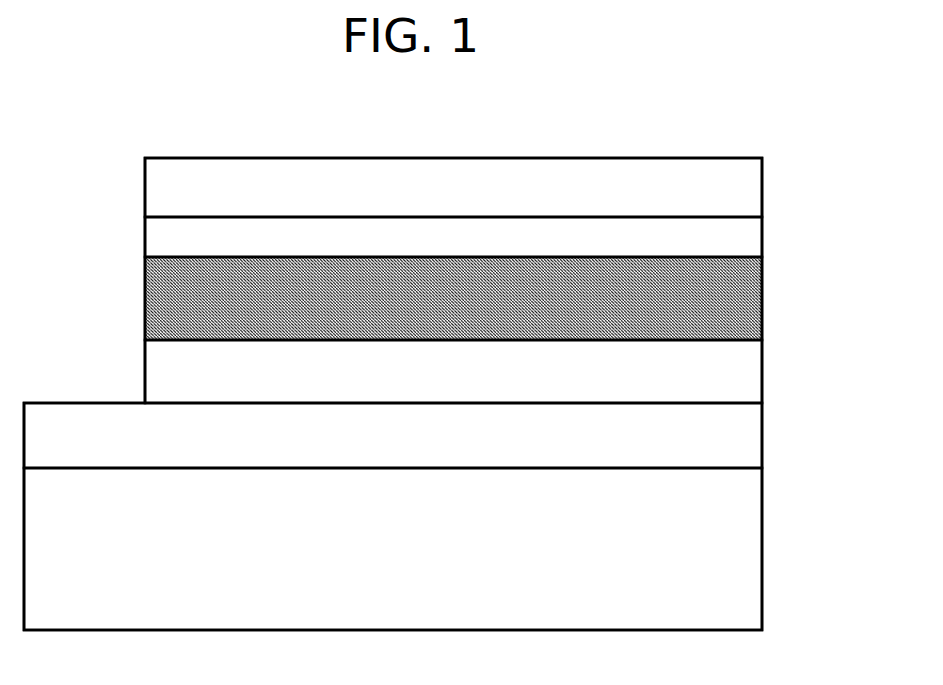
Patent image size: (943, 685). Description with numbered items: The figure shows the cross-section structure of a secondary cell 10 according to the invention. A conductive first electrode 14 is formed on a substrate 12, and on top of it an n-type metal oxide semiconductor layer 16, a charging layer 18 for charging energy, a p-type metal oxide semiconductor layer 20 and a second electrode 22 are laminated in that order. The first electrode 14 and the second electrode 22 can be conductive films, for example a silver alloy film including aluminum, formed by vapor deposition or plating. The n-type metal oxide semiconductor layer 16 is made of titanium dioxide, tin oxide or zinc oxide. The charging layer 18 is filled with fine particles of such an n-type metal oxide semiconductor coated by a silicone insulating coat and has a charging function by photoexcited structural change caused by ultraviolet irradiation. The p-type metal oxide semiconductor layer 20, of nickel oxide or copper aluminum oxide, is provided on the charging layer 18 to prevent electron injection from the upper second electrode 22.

The secondary cell 10 is at (270, 149).
The substrate 12 is at (733, 565).
The first electrode 14 is at (733, 438).
The n-type metal oxide semiconductor layer 16 is at (733, 376).
The charging layer 18 is at (733, 305).
The p-type metal oxide semiconductor layer 20 is at (735, 243).
The second electrode 22 is at (735, 192).